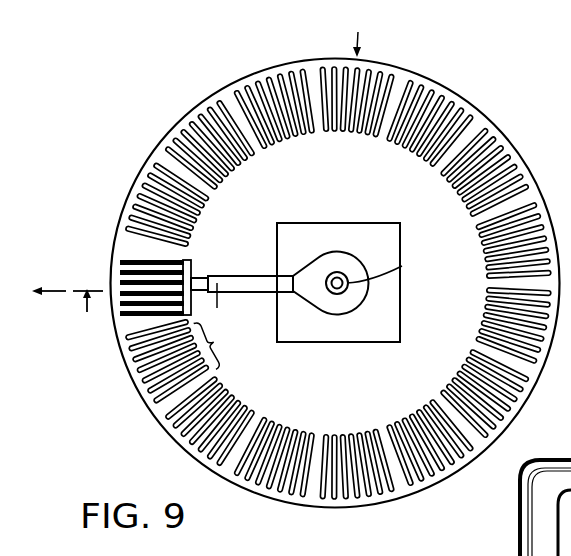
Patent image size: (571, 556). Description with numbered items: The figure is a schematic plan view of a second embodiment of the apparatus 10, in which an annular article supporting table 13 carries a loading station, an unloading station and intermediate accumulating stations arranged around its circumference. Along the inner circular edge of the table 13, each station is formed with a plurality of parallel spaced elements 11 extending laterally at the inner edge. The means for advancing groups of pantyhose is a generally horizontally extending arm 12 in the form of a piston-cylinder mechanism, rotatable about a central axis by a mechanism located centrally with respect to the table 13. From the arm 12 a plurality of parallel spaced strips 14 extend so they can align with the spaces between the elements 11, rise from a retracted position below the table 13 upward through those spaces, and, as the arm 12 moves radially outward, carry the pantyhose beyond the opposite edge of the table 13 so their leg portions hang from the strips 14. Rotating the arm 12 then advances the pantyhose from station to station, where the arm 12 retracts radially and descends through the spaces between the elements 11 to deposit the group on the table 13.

The apparatus 10 is at (178, 104).
The parallel spaced elements 11 is at (338, 282).
The arm 12 is at (257, 276).
The article supporting table 13 is at (167, 417).
The strips 14 is at (120, 322).